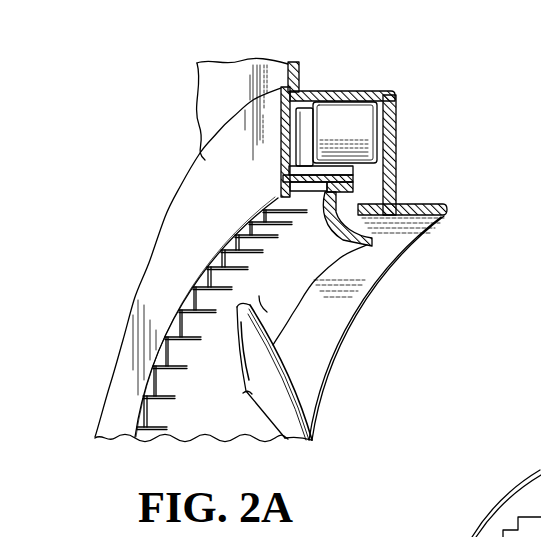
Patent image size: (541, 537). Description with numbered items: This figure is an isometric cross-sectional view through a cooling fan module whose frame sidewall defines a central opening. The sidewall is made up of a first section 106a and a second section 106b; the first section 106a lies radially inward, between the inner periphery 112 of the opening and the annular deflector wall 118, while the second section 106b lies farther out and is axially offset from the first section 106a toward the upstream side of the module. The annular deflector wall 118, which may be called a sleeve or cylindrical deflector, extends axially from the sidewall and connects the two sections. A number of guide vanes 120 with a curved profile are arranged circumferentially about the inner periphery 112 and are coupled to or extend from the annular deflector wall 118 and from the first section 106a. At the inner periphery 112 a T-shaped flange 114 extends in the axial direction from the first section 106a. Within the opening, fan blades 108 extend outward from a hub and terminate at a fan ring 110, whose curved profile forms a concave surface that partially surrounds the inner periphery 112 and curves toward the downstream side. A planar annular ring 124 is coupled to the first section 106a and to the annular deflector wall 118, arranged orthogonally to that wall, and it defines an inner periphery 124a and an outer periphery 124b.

The first section 106a is at (398, 143).
The second section 106b is at (296, 62).
The fan blades 108 is at (300, 370).
The fan ring 110 is at (313, 267).
The inner periphery 112 is at (412, 228).
The T-shaped flange 114 is at (421, 204).
The annular deflector wall 118 is at (343, 90).
The guide vanes 120 is at (350, 117).
The planar annular ring 124 is at (167, 293).
The inner periphery 124a is at (170, 340).
The outer periphery 124b is at (163, 217).